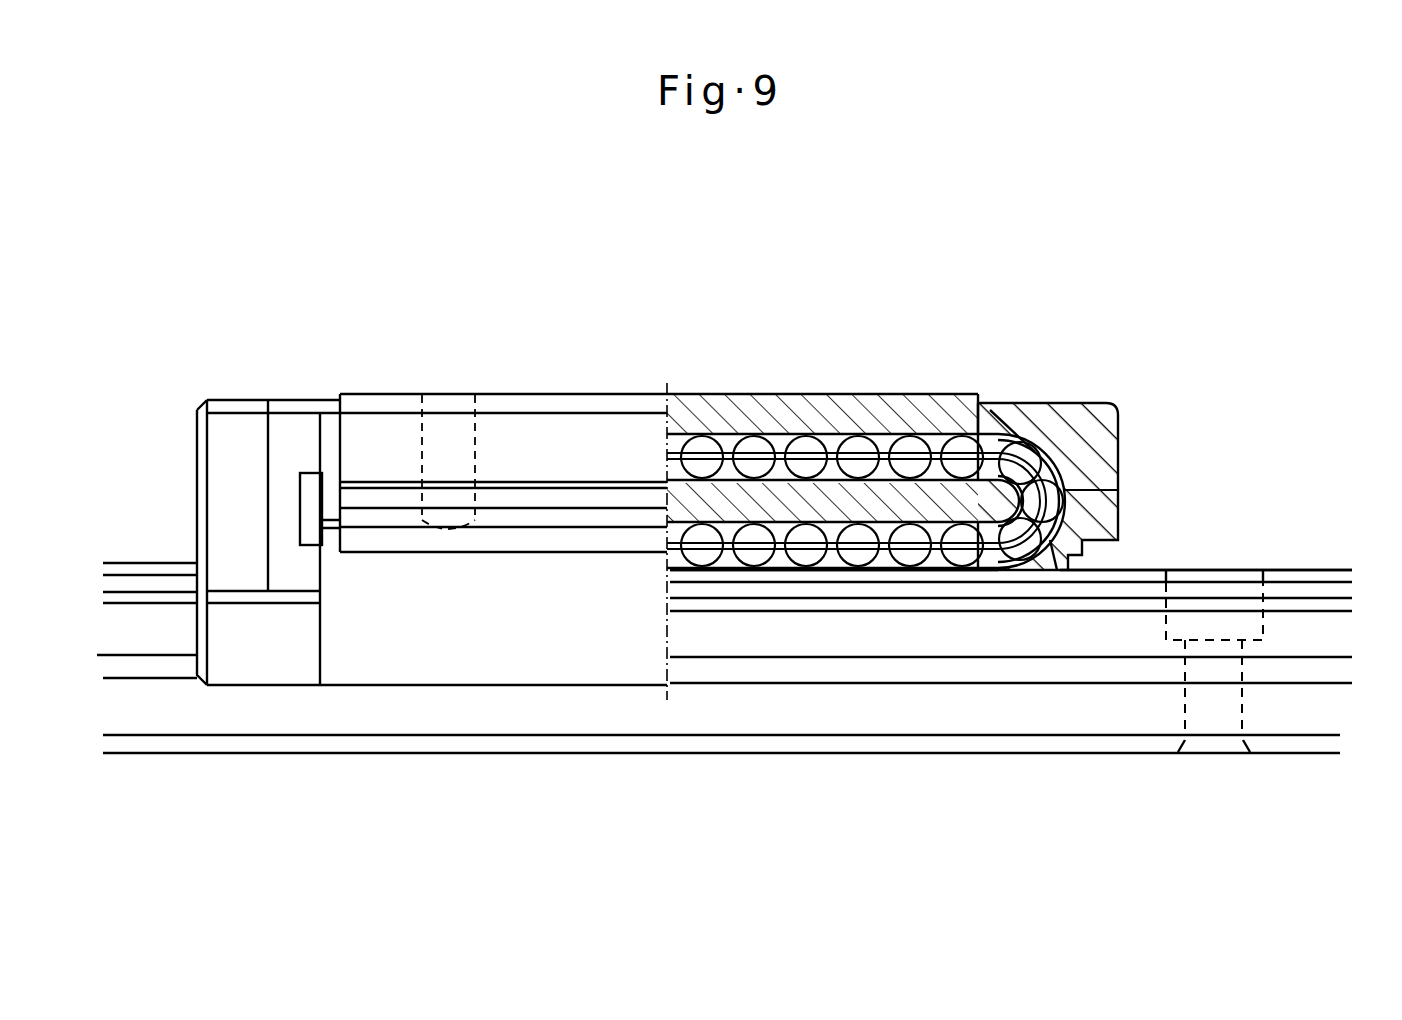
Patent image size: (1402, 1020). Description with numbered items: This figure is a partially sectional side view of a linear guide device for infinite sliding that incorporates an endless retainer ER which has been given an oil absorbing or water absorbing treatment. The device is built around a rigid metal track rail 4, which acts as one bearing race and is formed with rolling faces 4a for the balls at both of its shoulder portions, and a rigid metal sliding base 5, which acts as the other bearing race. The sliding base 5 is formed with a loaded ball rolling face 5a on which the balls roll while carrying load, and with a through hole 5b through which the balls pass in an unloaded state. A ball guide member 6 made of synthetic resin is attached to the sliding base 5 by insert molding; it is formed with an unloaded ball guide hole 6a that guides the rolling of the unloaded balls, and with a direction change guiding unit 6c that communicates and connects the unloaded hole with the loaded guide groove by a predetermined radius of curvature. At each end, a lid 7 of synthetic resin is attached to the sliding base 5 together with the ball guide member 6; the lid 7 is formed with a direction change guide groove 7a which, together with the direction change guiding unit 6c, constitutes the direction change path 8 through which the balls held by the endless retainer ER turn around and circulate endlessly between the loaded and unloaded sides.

The track rail 4 is at (1181, 566).
The rolling face 4a is at (1300, 568).
The sliding base 5 is at (499, 392).
The loaded ball rolling face 5a is at (748, 525).
The through hole 5b is at (688, 395).
The ball guide member 6 is at (290, 395).
The unloaded ball guide hole 6a is at (786, 440).
The direction change guiding unit 6c is at (1060, 425).
The lid 7 is at (189, 442).
The direction change guide groove 7a is at (1073, 495).
The direction change path 8 is at (1057, 572).
The endless retainer ER is at (810, 560).